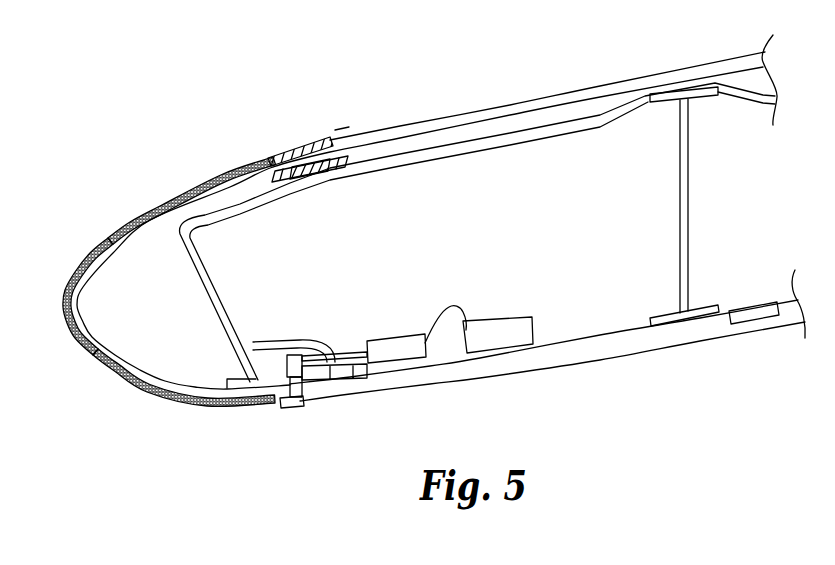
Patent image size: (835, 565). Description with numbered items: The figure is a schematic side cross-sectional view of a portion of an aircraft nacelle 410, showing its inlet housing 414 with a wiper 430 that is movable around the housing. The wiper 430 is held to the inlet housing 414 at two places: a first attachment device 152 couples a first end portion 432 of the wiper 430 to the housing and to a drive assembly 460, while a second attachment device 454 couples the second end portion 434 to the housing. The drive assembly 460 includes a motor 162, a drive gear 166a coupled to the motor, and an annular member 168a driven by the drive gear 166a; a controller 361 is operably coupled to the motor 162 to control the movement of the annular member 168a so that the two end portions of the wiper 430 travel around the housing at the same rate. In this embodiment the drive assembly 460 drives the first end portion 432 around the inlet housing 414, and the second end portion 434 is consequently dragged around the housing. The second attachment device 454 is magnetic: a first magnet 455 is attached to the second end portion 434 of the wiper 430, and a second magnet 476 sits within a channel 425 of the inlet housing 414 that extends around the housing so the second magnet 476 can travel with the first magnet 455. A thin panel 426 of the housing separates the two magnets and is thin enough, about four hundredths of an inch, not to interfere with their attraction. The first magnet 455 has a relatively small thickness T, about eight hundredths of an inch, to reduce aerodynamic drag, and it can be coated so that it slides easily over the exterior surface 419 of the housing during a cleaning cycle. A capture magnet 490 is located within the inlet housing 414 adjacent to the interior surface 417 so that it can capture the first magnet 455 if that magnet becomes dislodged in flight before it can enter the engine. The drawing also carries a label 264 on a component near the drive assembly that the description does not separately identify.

The aircraft nacelle 410 is at (133, 110).
The inlet housing 414 is at (455, 113).
The interior surface 417 is at (350, 393).
The exterior surface 419 is at (224, 177).
The channel 425 is at (347, 147).
The panel 426 is at (275, 184).
The wiper 430 is at (62, 312).
The first end portion 432 is at (243, 408).
The second end portion 434 is at (240, 167).
The second attachment device 454 is at (319, 112).
The first magnet 455 is at (296, 140).
The second magnet 476 is at (312, 183).
The first attachment device 152 is at (290, 396).
The motor 162 is at (403, 345).
The drive gear 166a is at (290, 356).
The annular member 168a is at (253, 376).
The bar 264 is at (353, 356).
The controller 361 is at (527, 338).
The drive assembly 460 is at (499, 290).
The capture magnet 490 is at (763, 310).
The thickness T is at (340, 122).